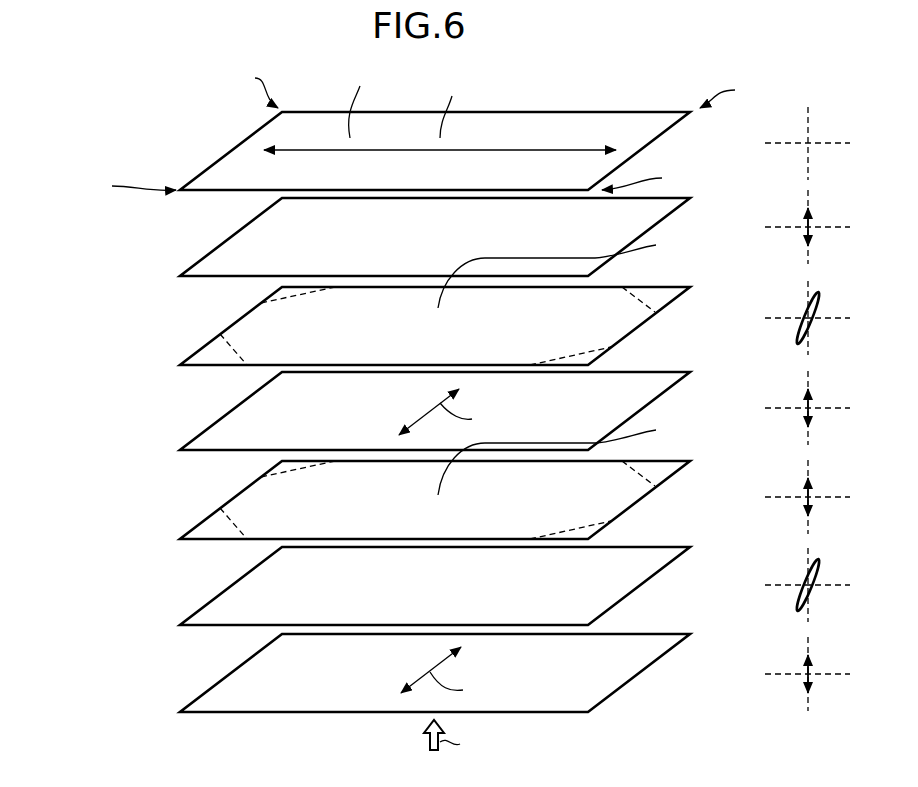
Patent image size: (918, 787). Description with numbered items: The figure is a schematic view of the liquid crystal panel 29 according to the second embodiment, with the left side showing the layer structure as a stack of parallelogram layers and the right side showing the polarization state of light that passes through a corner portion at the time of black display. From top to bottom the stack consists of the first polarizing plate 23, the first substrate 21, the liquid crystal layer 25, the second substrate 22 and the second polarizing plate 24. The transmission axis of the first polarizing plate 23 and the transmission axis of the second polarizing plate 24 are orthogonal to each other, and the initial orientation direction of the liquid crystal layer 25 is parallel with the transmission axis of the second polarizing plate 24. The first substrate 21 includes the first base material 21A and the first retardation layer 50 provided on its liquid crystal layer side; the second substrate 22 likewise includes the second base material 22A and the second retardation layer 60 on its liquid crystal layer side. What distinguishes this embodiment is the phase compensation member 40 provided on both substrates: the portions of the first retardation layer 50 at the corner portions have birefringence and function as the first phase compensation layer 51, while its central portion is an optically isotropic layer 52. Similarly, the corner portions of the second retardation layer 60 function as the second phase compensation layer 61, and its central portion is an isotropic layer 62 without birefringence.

The liquid crystal panel 29 is at (211, 96).
The first polarizing plate 23 is at (232, 160).
The first substrate 21 is at (112, 243).
The first base material 21A is at (232, 253).
The first retardation layer 50 is at (234, 318).
The first phase compensation layer 51 is at (287, 284).
The isotropic layer 52 is at (560, 271).
The liquid crystal layer 25 is at (234, 433).
The second substrate 22 is at (62, 485).
The second retardation layer 60 is at (234, 494).
The second phase compensation layer 61 is at (287, 458).
The isotropic layer 62 is at (560, 457).
The second base material 22A is at (234, 596).
The second polarizing plate 24 is at (234, 682).
The phase compensation member 40 is at (398, 388).